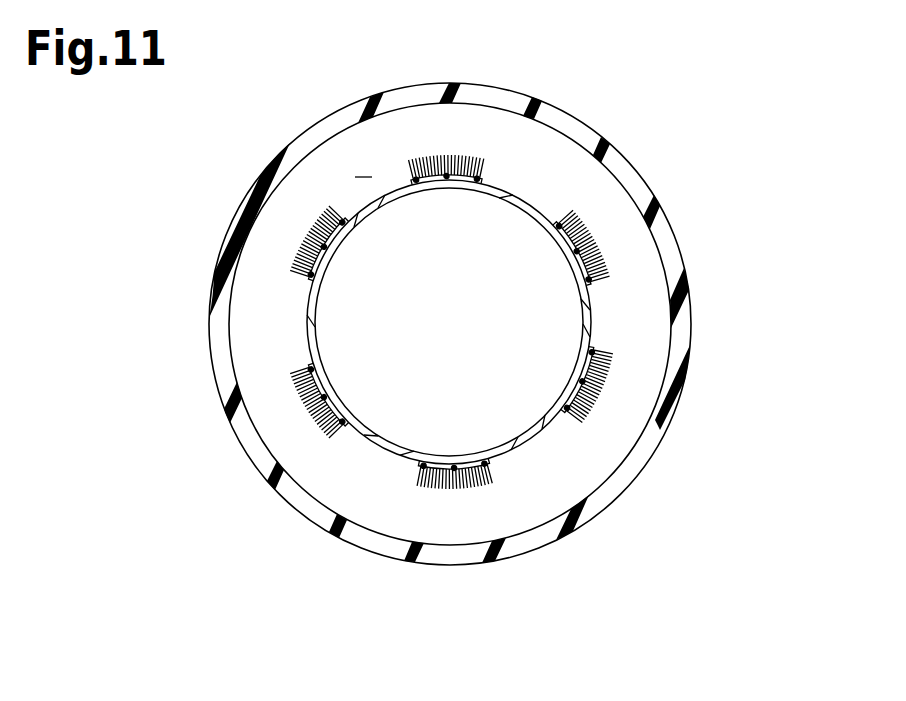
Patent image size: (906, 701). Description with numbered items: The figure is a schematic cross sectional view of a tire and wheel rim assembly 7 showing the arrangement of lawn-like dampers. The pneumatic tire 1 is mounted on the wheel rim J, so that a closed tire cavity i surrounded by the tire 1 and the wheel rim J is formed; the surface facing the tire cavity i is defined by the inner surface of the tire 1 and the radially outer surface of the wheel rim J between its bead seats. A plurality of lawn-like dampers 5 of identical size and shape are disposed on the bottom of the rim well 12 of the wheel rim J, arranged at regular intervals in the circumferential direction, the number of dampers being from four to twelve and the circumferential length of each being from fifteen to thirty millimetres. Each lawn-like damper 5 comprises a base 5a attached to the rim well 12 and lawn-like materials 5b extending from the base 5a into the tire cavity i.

The pneumatic tire 1 is at (697, 247).
The wheel rim J is at (610, 314).
The ring assembly 7 is at (799, 222).
The rim well 12 is at (528, 440).
The lawn-like damper 5 is at (457, 155).
The base 5a is at (346, 429).
The lawn-like materials 5b is at (317, 434).
The tire cavity i is at (363, 163).